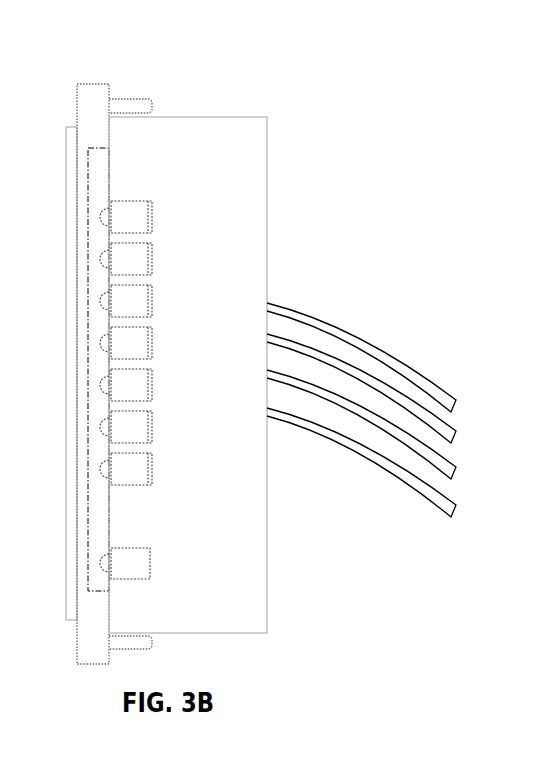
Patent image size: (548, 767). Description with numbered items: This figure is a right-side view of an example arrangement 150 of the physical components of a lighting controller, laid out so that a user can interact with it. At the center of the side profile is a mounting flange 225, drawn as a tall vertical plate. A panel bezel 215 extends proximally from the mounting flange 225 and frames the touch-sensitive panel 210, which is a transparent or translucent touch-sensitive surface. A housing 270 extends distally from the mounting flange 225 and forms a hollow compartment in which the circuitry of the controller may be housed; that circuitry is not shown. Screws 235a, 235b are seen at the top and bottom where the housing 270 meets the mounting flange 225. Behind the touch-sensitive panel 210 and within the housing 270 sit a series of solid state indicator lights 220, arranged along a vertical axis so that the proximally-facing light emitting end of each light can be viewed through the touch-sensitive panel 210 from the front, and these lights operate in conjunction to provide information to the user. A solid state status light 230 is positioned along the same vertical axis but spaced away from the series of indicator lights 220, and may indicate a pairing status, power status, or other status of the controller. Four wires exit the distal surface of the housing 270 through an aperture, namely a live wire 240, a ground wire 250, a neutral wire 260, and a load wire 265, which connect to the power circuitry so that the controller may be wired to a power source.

The arrangement 150 is at (193, 63).
The touch-sensitive panel 210 is at (110, 182).
The panel bezel 215 is at (66, 127).
The series of solid state indicator lights 220 is at (160, 203).
The mounting flange 225 is at (100, 84).
The solid state status light 230 is at (150, 568).
The screw 235a is at (146, 97).
The screw 235b is at (150, 650).
The live wire 240 is at (455, 400).
The ground wire 250 is at (455, 433).
The neutral wire 260 is at (455, 467).
The load wire 265 is at (455, 505).
The housing 270 is at (256, 117).